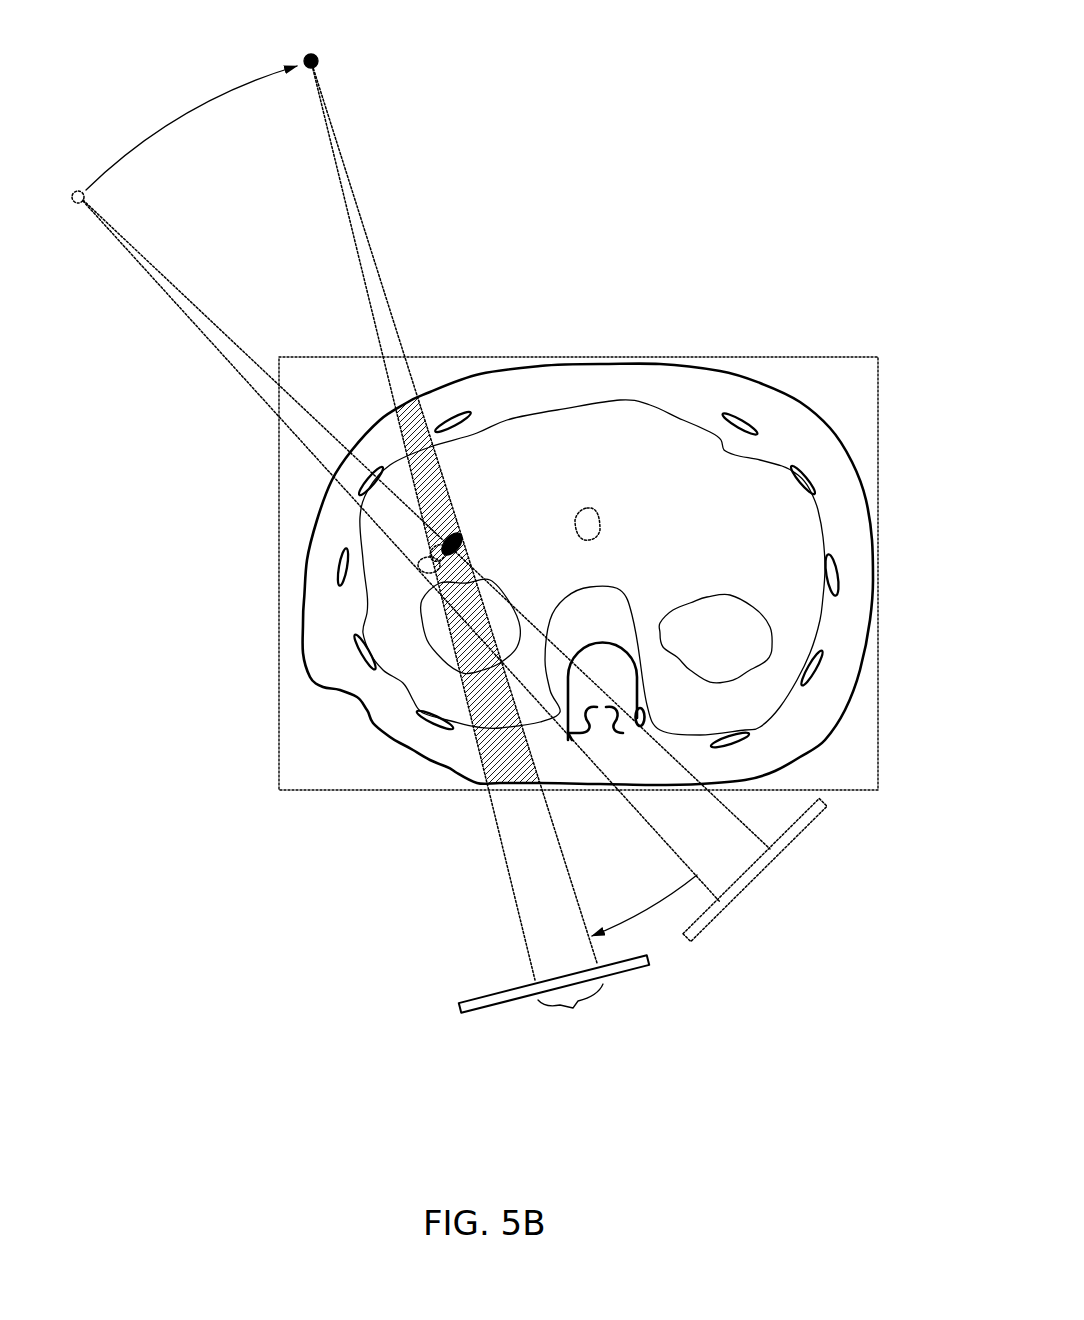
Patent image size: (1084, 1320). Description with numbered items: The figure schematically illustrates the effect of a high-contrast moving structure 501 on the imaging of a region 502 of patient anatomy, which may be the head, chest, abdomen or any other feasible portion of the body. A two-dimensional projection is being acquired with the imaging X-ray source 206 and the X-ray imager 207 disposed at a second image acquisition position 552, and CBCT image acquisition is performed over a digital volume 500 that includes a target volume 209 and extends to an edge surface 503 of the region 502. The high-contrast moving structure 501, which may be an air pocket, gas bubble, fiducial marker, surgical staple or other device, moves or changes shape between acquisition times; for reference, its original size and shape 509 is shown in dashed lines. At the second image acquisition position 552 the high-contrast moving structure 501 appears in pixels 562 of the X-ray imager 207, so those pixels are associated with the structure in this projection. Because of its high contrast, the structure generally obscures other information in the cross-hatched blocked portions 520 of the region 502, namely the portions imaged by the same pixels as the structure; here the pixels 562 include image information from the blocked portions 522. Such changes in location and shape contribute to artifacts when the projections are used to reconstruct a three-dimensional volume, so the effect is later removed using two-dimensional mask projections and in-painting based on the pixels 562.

The imaging X-ray source 206 is at (310, 53).
The X-ray imager 207 is at (472, 1000).
The target volume 209 is at (602, 518).
The digital volume 500 is at (668, 356).
The high-contrast moving structure 501 is at (466, 536).
The region of patient anatomy 502 is at (843, 440).
The edge surface 503 is at (366, 718).
The original size and shape 509 is at (418, 561).
The blocked portions 520 is at (427, 416).
The blocked portions 522 is at (440, 479).
The second image acquisition position 552 is at (352, 62).
The pixels 562 is at (575, 1007).